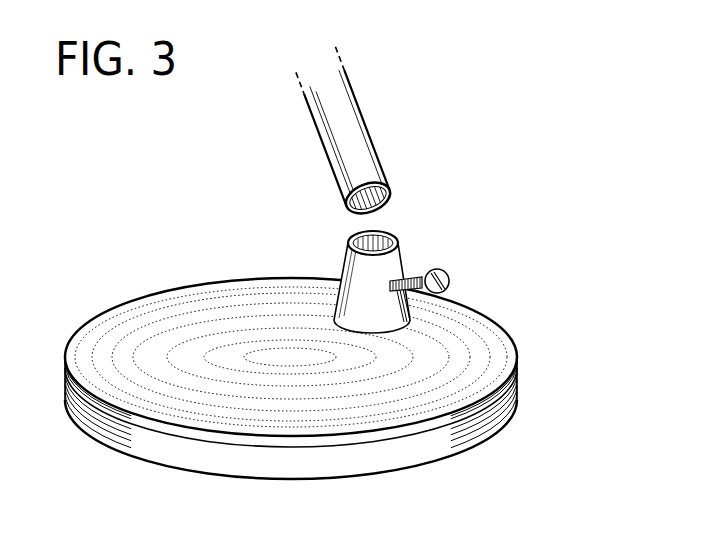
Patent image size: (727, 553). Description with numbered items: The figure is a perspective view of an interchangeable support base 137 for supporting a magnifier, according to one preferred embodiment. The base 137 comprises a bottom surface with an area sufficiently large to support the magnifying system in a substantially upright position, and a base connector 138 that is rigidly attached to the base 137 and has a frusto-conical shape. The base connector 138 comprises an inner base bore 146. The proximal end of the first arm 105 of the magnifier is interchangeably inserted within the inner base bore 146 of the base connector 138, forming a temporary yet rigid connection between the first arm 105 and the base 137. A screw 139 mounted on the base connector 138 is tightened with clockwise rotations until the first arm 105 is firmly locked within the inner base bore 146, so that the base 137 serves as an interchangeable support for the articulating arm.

The first arm 105 is at (375, 133).
The base 137 is at (515, 380).
The base connector 138 is at (366, 253).
The screw 139 is at (448, 272).
The inner base bore 146 is at (380, 232).